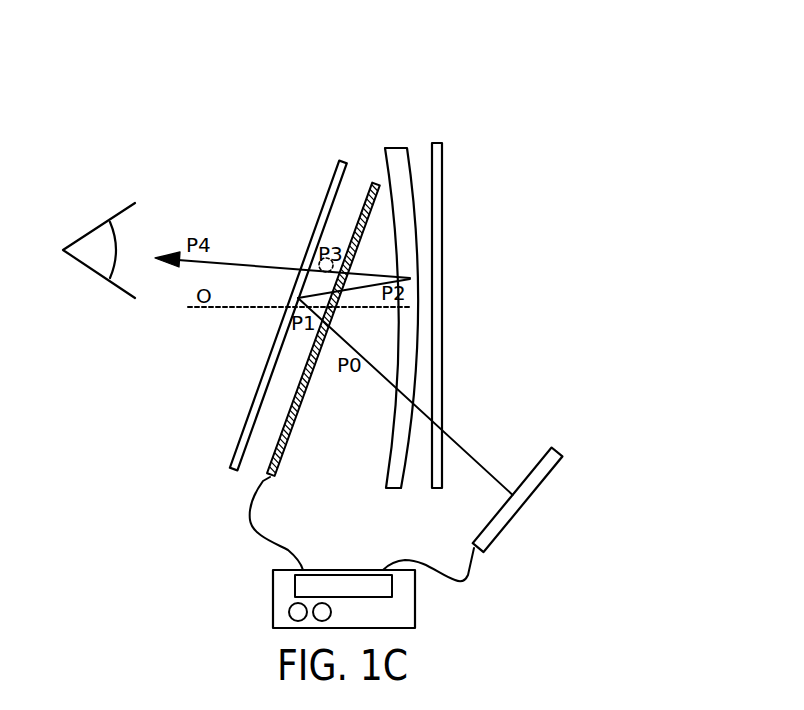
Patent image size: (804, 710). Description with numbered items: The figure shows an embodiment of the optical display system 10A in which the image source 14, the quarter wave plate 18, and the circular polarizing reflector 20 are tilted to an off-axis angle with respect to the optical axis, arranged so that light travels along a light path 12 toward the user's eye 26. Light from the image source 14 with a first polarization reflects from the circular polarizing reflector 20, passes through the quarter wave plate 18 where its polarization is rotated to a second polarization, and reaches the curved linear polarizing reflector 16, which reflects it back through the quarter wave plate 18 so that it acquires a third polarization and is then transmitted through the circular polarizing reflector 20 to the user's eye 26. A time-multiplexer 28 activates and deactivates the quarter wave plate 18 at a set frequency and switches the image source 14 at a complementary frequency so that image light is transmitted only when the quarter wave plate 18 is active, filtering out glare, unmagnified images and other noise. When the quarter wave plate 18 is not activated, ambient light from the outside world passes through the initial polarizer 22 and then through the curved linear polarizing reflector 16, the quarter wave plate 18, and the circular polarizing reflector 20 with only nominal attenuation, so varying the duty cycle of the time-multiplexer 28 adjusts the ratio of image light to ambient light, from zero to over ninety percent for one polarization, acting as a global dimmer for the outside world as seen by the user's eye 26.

The optical display system 10A is at (447, 52).
The light path 12 is at (270, 266).
The image source 14 is at (563, 450).
The curved linear polarizing reflector 16 is at (394, 148).
The quarter wave plate 18 is at (377, 183).
The circular polarizing reflector 20 is at (346, 161).
The initial polarizer 22 is at (458, 130).
The user's eye 26 is at (116, 215).
The time-multiplexer 28 is at (395, 624).